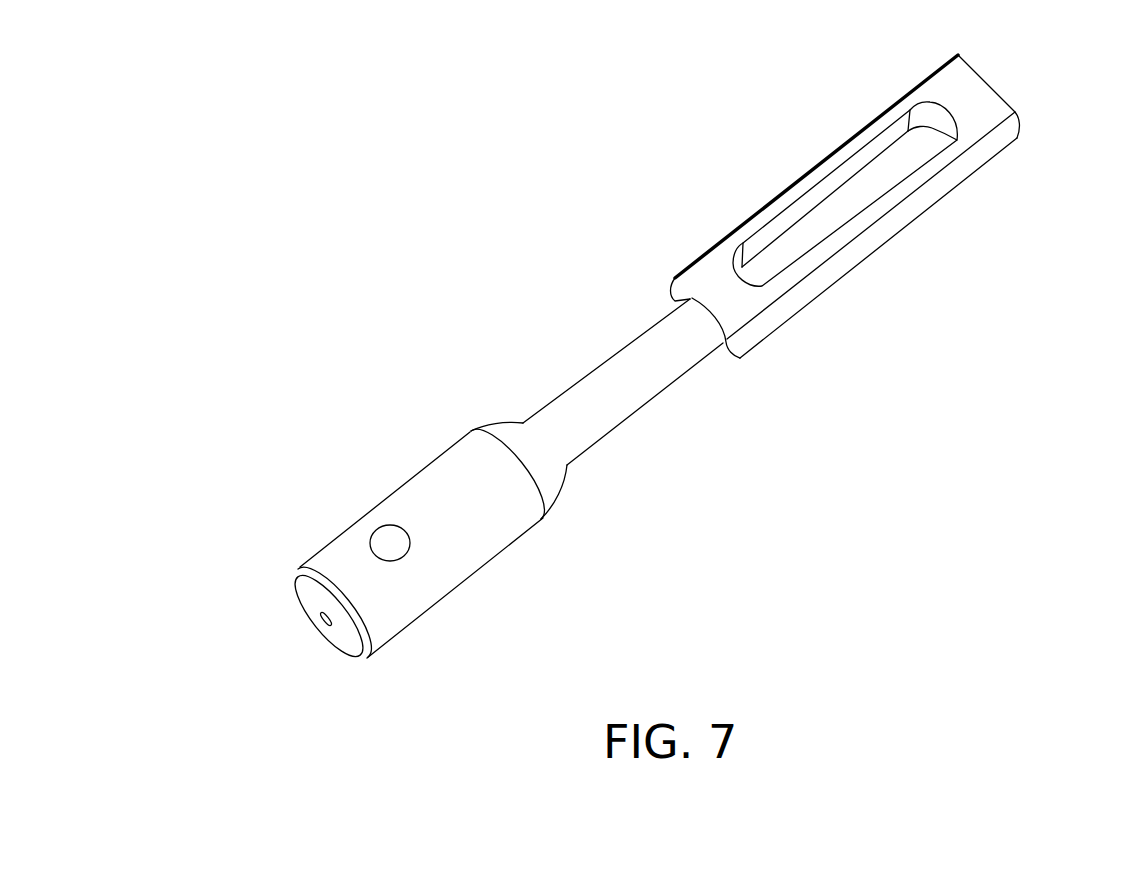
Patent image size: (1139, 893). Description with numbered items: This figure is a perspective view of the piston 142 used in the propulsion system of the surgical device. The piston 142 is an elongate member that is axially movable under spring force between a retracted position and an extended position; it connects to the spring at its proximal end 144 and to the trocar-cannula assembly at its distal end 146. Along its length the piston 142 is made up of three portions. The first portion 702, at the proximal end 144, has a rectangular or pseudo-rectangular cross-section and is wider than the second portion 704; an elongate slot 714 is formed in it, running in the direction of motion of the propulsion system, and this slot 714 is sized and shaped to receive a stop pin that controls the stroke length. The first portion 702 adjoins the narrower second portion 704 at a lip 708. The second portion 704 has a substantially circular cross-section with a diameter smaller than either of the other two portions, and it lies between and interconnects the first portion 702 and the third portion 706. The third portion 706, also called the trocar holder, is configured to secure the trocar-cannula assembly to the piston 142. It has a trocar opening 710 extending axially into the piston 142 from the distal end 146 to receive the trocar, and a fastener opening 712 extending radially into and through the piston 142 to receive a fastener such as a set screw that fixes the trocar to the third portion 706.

The piston 142 is at (517, 170).
The proximal end 144 is at (1013, 113).
The distal end 146 is at (298, 571).
The first portion 702 is at (805, 170).
The second portion 704 is at (608, 357).
The third portion 706 is at (390, 493).
The lip 708 is at (727, 348).
The trocar opening 710 is at (327, 624).
The fastener opening 712 is at (400, 553).
The elongate slot 714 is at (845, 212).